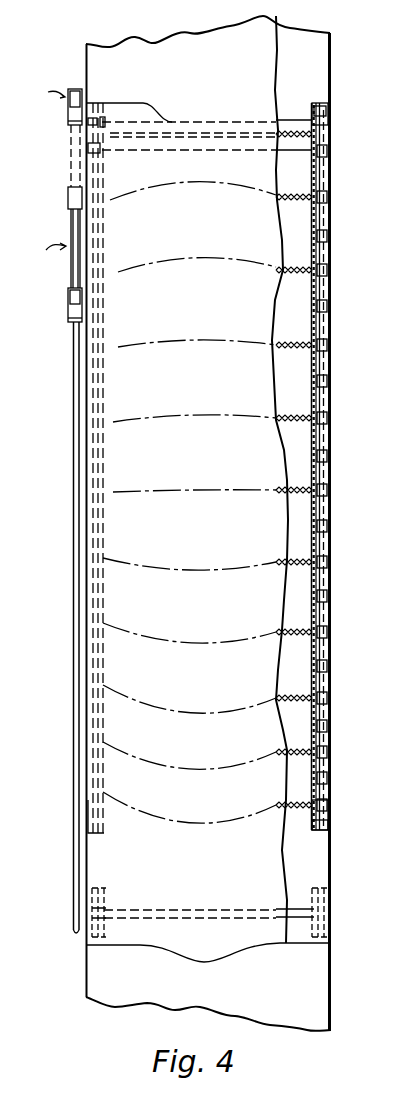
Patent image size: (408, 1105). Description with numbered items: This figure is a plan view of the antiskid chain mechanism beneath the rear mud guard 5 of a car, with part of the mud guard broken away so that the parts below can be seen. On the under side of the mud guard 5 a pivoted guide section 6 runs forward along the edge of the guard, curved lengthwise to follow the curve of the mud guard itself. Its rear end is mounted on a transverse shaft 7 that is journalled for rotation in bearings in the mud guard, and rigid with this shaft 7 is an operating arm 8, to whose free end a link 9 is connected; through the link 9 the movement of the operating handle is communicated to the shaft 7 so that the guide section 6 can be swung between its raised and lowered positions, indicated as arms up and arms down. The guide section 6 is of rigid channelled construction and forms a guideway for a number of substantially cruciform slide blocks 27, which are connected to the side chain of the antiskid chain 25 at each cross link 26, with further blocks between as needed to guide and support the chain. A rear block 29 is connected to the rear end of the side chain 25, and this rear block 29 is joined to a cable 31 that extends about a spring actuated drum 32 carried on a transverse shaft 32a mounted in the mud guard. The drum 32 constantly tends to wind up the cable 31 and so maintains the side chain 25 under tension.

The rear mud guard 5 is at (67, 707).
The pivoted guide section 6 is at (328, 673).
The transverse shaft 7 is at (173, 197).
The operating arm 8 is at (72, 268).
The link 9 is at (72, 455).
The antiskid chain 25 is at (311, 385).
The cross link 26 is at (283, 343).
The slide block 27 is at (326, 490).
The rear block 29 is at (330, 816).
The cable 31 is at (327, 862).
The spring actuated drum 32 is at (330, 911).
The transverse shaft 32a is at (222, 910).